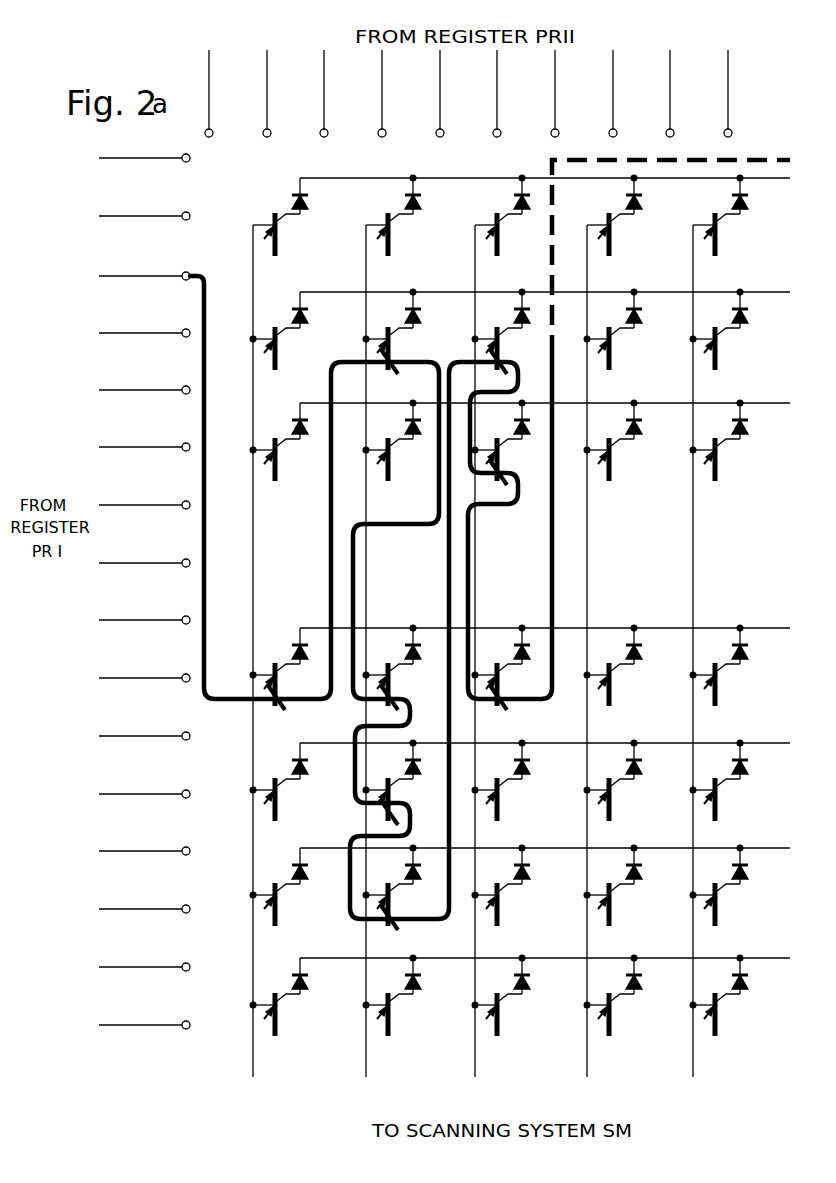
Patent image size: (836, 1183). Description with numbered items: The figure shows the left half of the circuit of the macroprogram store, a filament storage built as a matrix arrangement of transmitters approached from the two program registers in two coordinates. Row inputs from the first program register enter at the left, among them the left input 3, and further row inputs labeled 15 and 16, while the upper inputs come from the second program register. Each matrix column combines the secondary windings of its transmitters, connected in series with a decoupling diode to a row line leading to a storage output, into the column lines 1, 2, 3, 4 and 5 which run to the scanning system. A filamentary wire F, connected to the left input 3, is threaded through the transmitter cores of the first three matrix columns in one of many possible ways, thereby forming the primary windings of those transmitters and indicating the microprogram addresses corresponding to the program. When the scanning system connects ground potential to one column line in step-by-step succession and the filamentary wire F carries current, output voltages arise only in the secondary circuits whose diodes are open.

The column line 1 is at (203, 580).
The column line 2 is at (390, 643).
The left input 3 is at (314, 643).
The column line 4 is at (611, 643).
The column line 5 is at (717, 643).
The fifteenth row input line 15 is at (148, 955).
The sixteenth row input line 16 is at (148, 1013).
The filamentary wire F is at (440, 503).